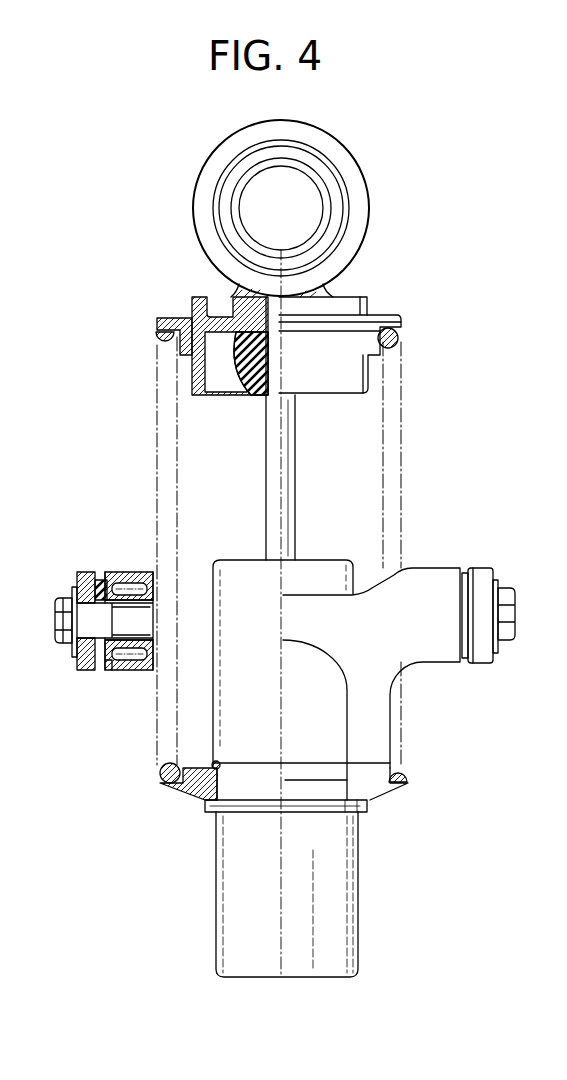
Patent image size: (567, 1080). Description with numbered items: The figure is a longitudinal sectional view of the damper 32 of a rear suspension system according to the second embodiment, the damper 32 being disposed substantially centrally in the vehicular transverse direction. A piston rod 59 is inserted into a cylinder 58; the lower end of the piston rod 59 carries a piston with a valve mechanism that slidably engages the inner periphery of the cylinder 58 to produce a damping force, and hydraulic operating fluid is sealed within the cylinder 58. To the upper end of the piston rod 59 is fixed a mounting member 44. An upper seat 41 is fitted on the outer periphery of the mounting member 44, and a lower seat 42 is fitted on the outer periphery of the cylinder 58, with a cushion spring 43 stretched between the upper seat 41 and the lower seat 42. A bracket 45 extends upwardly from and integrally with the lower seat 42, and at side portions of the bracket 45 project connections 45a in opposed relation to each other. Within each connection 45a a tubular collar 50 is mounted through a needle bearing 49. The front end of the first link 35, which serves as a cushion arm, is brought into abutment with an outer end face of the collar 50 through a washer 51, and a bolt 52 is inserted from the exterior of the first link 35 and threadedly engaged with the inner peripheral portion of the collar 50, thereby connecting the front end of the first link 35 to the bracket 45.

The damper 32 is at (417, 424).
The first link 35 is at (87, 671).
The upper seat 41 is at (172, 317).
The lower seat 42 is at (202, 788).
The cushion spring 43 is at (400, 340).
The mounting member 44 is at (367, 300).
The bracket 45 is at (375, 717).
The connections 45a is at (122, 572).
The needle bearing 49 is at (125, 671).
The tubular collar 50 is at (135, 672).
The washer 51 is at (100, 579).
The bolt 52 is at (62, 623).
The cylinder 58 is at (342, 893).
The piston rod 59 is at (284, 493).